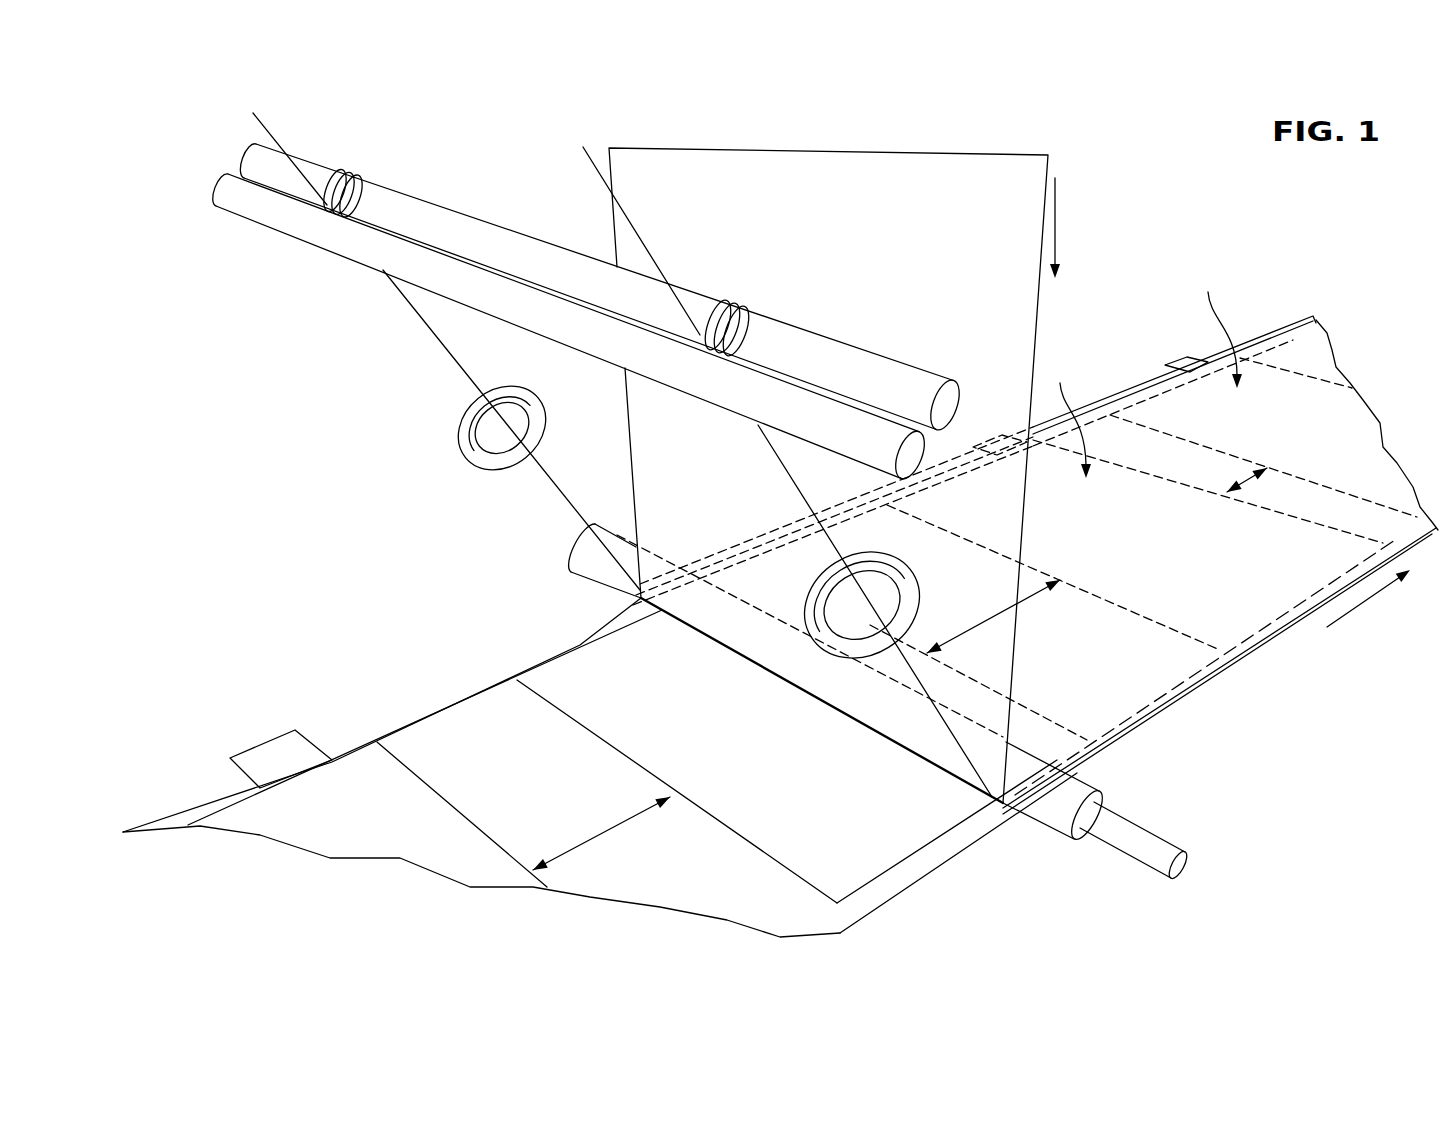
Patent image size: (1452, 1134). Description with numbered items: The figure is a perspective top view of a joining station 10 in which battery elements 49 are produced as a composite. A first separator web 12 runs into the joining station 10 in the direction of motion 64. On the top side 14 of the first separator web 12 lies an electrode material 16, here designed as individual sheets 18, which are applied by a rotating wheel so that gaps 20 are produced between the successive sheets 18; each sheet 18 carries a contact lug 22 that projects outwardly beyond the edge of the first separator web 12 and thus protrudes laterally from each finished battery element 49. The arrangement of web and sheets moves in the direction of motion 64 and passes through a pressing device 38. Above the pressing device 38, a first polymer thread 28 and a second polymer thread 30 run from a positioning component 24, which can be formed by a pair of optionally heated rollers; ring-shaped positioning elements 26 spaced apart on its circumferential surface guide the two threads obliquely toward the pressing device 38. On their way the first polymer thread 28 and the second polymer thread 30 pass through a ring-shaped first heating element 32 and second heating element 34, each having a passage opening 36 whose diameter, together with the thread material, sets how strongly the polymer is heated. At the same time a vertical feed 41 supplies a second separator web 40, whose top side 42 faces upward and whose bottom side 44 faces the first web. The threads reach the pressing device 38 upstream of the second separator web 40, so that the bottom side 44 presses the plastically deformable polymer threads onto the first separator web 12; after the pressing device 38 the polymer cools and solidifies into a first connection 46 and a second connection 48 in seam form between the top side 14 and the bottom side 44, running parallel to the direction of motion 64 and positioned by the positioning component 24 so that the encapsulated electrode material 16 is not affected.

The joining station 10 is at (1165, 216).
The first separator web 12 is at (927, 877).
The top side of the first separator web 14 is at (980, 837).
The electrode material 16 is at (798, 704).
The sheet 18 is at (1225, 450).
The gap 20 is at (1257, 480).
The contact lug 22 is at (1187, 363).
The positioning component 24 is at (228, 188).
The positioning elements 26 is at (737, 300).
The first polymer thread 28 is at (627, 210).
The second polymer thread 30 is at (437, 347).
The first heating element 32 is at (905, 585).
The second heating element 34 is at (473, 453).
The passage opening 36 is at (827, 617).
The pressing device 38 is at (1107, 798).
The second separator web 40 is at (828, 475).
The vertical feed 41 is at (1058, 222).
The top side of the second separator web 42 is at (1150, 670).
The bottom side of the second separator web 44 is at (683, 460).
The first connection 46 is at (1168, 710).
The second connection 48 is at (1137, 393).
The battery element 49 is at (1144, 368).
The direction of motion 64 is at (1370, 600).